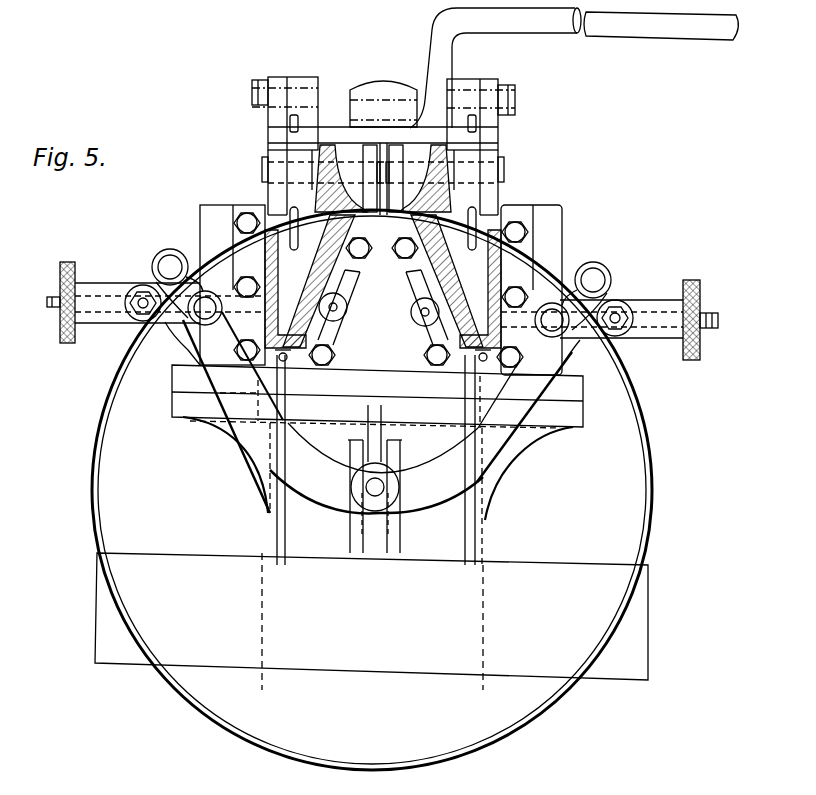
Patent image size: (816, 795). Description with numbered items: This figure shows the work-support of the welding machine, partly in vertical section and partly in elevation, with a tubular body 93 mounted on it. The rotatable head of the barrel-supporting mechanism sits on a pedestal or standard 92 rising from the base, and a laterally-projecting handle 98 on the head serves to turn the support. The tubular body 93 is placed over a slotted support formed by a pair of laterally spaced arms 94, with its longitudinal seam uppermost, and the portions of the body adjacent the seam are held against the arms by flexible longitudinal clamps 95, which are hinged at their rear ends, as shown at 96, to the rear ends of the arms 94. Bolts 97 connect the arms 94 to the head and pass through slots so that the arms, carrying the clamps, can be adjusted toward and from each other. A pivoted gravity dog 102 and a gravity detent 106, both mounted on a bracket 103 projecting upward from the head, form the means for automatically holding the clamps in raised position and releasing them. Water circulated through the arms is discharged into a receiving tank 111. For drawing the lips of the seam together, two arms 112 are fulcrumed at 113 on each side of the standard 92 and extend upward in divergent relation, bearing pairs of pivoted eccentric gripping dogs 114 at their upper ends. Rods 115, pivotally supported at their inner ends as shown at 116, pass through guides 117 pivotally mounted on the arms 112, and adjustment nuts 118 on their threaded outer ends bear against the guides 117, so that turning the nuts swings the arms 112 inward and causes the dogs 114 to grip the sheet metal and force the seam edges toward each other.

The pedestal or standard 92 is at (480, 541).
The tubular body 93 is at (655, 522).
The laterally spaced arms 94 is at (272, 508).
The longitudinal clamps 95 is at (280, 183).
The hinge 96 is at (357, 160).
The bolts 97 is at (522, 232).
The handle 98 is at (623, 30).
The gravity dog or detent 102 is at (305, 62).
The bracket 103 is at (268, 128).
The gravity detent 106 is at (478, 133).
The receiving tank 111 is at (371, 621).
The arms 112 is at (262, 455).
The fulcrum 113 is at (395, 498).
The eccentric gripping dogs 114 is at (198, 275).
The rods 115 is at (47, 307).
The pivotal support 116 is at (418, 313).
The guides 117 is at (137, 322).
The adjustment nuts 118 is at (69, 342).